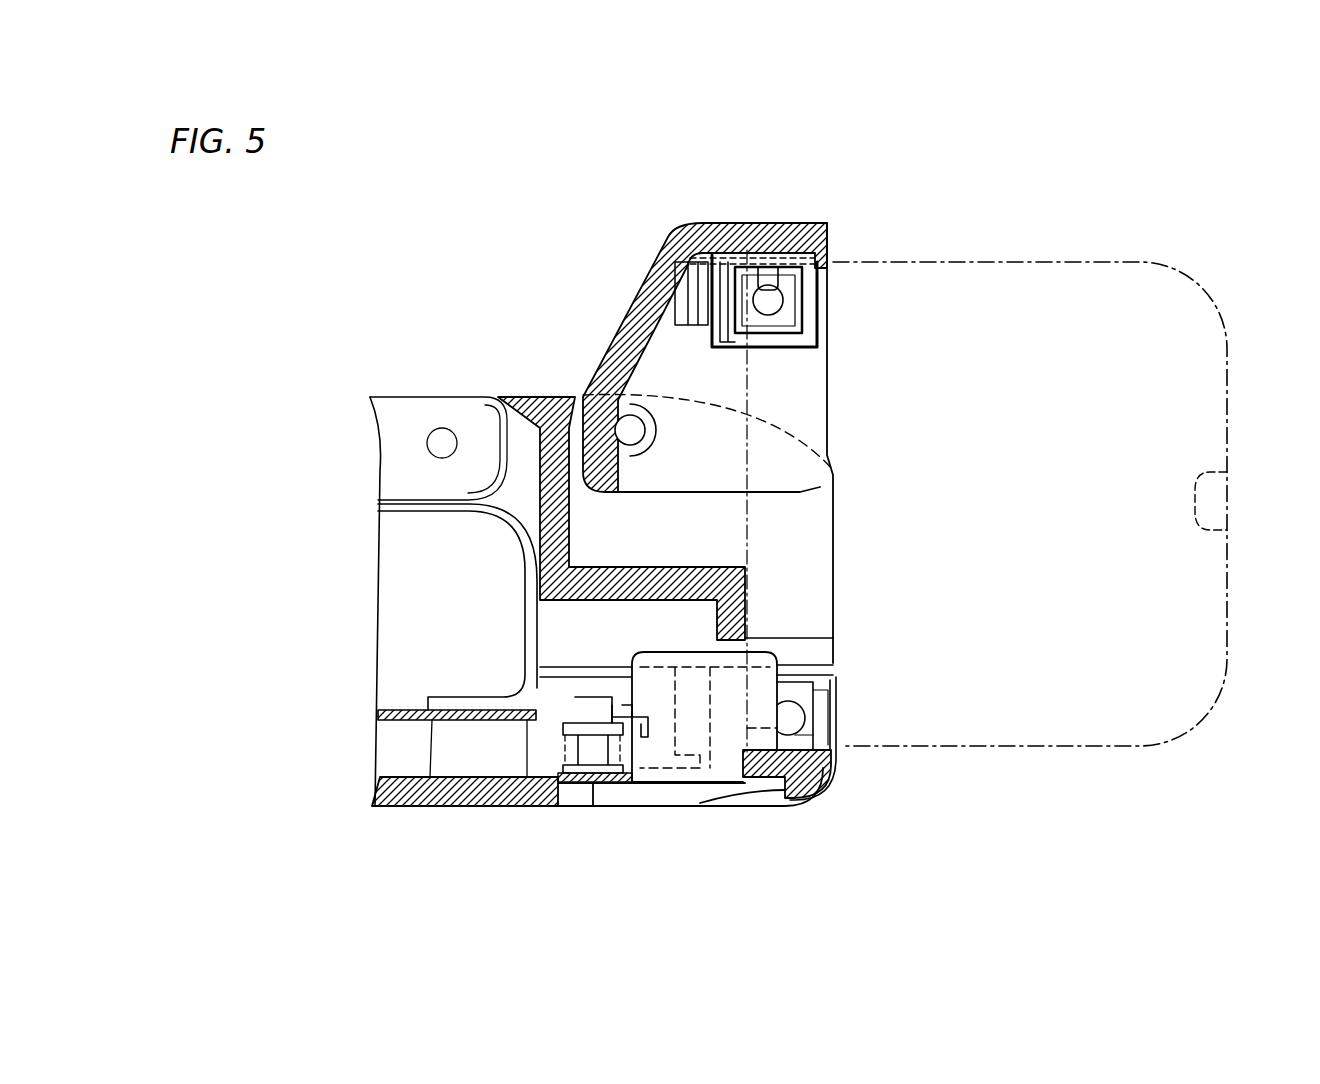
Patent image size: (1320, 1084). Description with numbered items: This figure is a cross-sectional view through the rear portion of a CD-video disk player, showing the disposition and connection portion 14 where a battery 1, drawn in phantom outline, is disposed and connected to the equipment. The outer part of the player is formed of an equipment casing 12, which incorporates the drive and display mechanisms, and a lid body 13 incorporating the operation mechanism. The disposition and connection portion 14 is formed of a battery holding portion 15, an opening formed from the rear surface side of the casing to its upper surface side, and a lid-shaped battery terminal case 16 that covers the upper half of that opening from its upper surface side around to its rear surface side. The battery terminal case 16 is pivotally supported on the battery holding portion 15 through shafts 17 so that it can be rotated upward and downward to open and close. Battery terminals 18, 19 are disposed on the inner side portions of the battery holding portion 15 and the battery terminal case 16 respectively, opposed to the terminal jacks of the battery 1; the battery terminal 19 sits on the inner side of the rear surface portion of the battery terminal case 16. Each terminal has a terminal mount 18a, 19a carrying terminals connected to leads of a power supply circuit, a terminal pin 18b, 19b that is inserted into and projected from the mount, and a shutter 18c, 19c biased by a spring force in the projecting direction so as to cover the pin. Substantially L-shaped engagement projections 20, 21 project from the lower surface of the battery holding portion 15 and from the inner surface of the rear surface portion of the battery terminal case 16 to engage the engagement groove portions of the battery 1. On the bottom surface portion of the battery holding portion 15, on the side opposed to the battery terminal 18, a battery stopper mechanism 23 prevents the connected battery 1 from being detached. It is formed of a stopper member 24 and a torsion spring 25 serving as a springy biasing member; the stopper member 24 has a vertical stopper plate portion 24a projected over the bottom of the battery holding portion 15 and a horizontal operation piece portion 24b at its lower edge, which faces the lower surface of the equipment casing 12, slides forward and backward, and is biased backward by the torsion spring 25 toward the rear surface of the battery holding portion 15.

The battery 1 is at (1052, 232).
The equipment casing 12 is at (461, 810).
The lid body 13 is at (428, 415).
The disposition and connection portion 14 is at (877, 520).
The battery holding portion 15 is at (808, 590).
The battery terminal case 16 is at (668, 250).
The shaft 17 is at (630, 428).
The battery terminal 18 is at (836, 683).
The terminal mount 18a is at (832, 713).
The terminal pin 18b is at (808, 738).
The shutter 18c is at (790, 720).
The battery terminal 19 is at (818, 265).
The terminal mount 19a is at (820, 292).
The terminal pin 19b is at (790, 302).
The shutter 19c is at (810, 338).
The engagement projection 20 is at (823, 788).
The engagement projection 21 is at (768, 262).
The battery stopper mechanism 23 is at (642, 815).
The stopper member 24 is at (823, 890).
The stopper plate portion 24a is at (722, 745).
The operation piece portion 24b is at (688, 792).
The torsion spring 25 is at (585, 782).